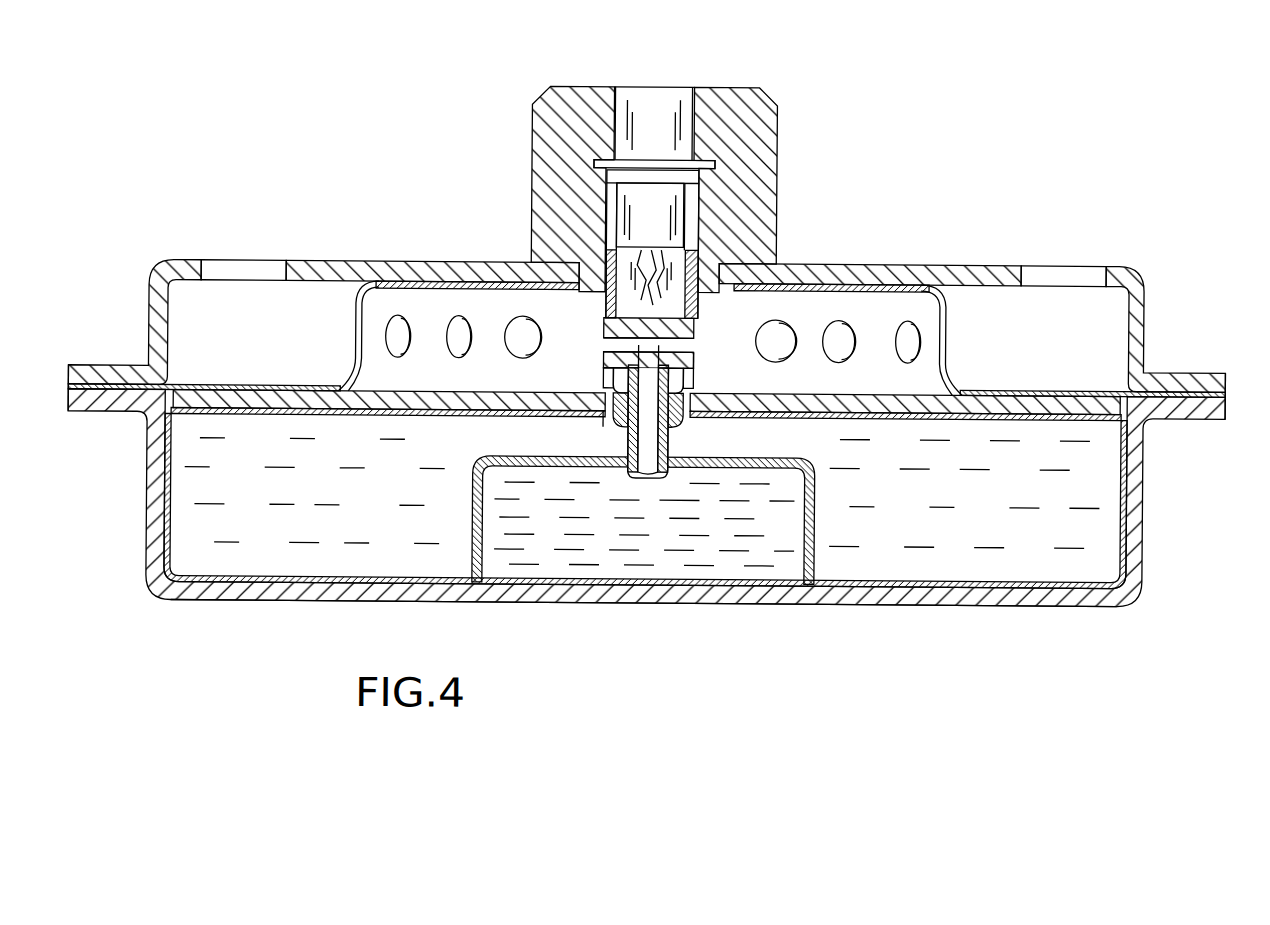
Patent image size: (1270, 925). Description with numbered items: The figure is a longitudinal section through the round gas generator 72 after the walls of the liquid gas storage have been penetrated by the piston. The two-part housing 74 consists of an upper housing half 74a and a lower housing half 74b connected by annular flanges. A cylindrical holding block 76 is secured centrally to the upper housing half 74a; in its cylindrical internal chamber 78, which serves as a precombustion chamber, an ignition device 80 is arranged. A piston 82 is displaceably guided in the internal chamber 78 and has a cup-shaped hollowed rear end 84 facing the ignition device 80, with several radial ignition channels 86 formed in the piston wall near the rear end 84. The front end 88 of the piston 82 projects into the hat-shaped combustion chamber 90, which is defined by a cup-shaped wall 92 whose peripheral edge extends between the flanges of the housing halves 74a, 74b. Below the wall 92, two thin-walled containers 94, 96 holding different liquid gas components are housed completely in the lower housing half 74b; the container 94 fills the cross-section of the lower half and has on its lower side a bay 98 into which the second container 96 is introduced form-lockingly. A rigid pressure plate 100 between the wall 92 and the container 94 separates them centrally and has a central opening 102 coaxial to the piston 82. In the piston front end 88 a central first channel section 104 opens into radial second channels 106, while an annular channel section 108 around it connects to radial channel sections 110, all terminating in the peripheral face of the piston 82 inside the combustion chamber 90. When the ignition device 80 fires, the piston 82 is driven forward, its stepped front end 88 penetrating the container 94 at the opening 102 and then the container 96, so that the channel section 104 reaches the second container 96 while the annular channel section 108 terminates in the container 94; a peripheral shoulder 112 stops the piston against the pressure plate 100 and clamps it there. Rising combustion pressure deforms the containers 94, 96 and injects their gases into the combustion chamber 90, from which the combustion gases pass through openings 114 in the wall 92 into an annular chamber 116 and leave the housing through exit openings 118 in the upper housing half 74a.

The gas generator 72 is at (883, 128).
The two-part housing 74 is at (1225, 350).
The upper housing half 74a is at (1136, 318).
The lower housing half 74b is at (1140, 534).
The cylindrical holding block 76 is at (740, 110).
The internal chamber 78 is at (727, 216).
The ignition device 80 is at (649, 190).
The piston 82 is at (687, 238).
The rear end 84 is at (621, 259).
The radial ignition channels 86 is at (603, 303).
The front end 88 is at (625, 420).
The combustion chamber 90 is at (712, 376).
The cup-shaped wall 92 is at (998, 390).
The container 94 is at (1132, 466).
The second container 96 is at (794, 597).
The bay 98 is at (791, 618).
The pressure plate 100 is at (1029, 402).
The central opening 102 is at (700, 413).
The first channel section 104 is at (647, 480).
The radial second liquified gas channels 106 is at (603, 343).
The annular channel section 108 is at (628, 450).
The radial channel sections 110 is at (603, 372).
The peripheral shoulder 112 is at (597, 431).
The openings 114 is at (383, 337).
The annular chamber 116 is at (1060, 334).
The exit openings 118 is at (232, 263).